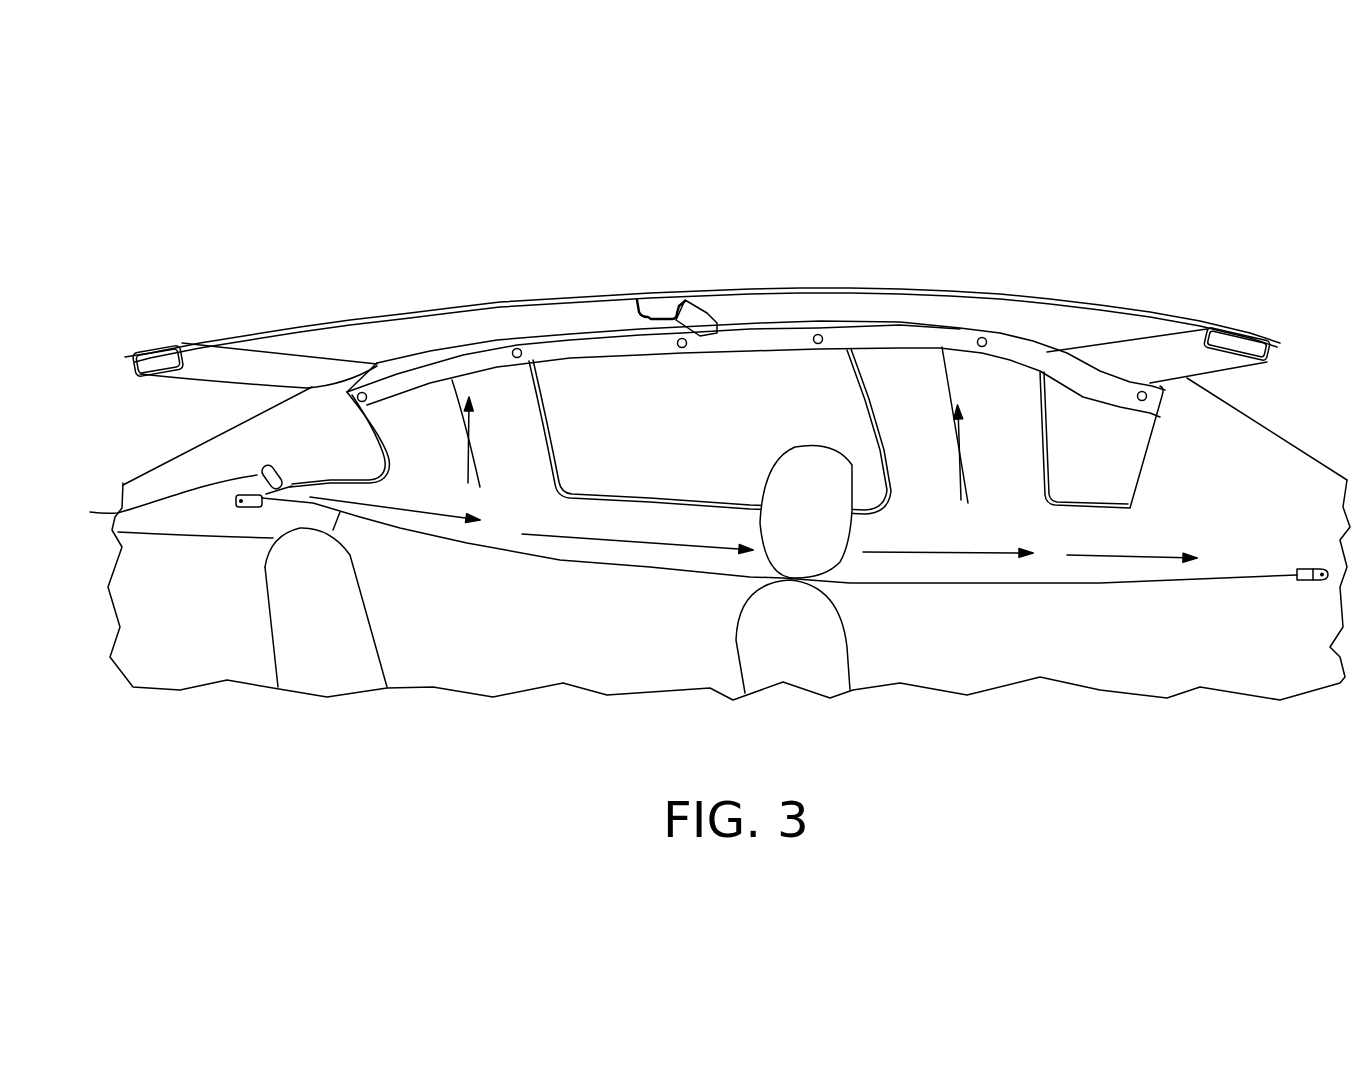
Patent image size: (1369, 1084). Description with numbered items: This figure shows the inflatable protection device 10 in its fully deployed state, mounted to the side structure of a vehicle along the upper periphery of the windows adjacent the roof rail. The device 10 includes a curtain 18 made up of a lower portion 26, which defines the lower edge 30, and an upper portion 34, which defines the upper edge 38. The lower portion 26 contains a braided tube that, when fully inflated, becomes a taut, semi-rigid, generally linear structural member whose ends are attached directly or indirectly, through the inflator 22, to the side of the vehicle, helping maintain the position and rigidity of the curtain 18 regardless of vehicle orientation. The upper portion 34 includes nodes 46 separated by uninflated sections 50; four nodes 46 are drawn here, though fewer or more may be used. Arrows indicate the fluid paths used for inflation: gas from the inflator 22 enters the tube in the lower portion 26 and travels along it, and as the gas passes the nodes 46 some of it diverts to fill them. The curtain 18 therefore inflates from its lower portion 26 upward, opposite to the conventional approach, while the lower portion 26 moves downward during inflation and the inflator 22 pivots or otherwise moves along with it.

The device 10 is at (325, 710).
The curtain 18 is at (371, 462).
The inflator 22 is at (173, 493).
The lower portion 26 is at (550, 513).
The lower edge 30 is at (607, 563).
The upper portion 34 is at (1160, 443).
The upper edge 38 is at (878, 337).
The nodes 46 is at (408, 453).
The uninflated sections 50 is at (700, 433).